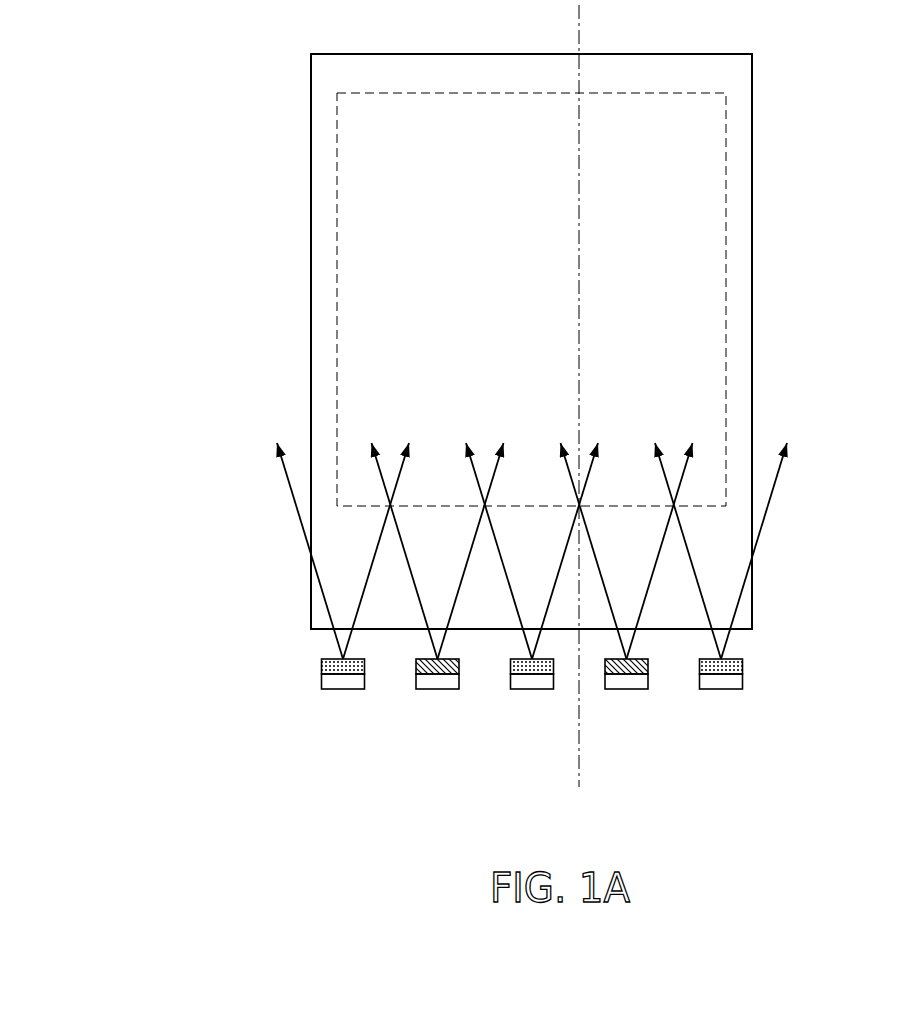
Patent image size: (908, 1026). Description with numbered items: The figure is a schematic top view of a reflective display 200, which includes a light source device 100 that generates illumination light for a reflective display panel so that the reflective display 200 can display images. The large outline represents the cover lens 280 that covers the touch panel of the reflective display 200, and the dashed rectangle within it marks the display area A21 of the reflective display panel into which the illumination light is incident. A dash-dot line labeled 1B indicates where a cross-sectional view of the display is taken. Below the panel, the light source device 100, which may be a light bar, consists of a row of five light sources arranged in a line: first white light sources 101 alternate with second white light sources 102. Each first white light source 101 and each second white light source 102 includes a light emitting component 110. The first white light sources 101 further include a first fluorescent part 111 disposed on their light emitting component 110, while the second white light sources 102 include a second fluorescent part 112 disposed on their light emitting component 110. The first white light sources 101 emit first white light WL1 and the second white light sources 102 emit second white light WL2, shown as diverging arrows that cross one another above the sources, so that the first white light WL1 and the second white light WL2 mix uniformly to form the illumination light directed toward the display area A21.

The reflective display 200 is at (58, 71).
The cover lens 280 is at (741, 70).
The display area A21 is at (727, 332).
The line 1B- 1B is at (597, 18).
The light source device 100 is at (513, 733).
The first white light source 101 is at (436, 704).
The second white light source 102 is at (513, 746).
The light emitting component 110 is at (326, 680).
The first fluorescent part 111 is at (326, 668).
The second fluorescent part 112 is at (448, 684).
The first white light WL1 is at (288, 487).
The second white light WL2 is at (654, 576).